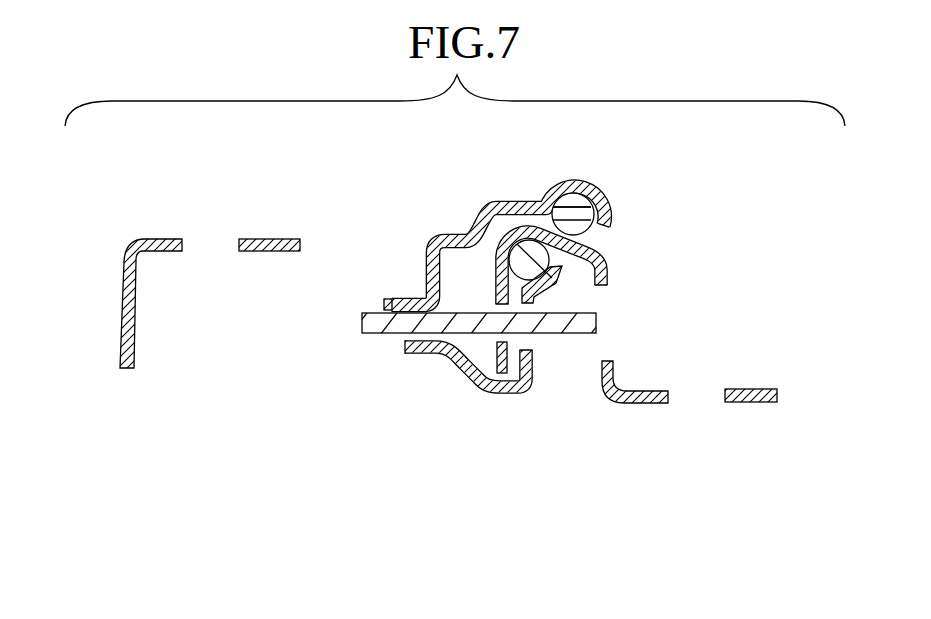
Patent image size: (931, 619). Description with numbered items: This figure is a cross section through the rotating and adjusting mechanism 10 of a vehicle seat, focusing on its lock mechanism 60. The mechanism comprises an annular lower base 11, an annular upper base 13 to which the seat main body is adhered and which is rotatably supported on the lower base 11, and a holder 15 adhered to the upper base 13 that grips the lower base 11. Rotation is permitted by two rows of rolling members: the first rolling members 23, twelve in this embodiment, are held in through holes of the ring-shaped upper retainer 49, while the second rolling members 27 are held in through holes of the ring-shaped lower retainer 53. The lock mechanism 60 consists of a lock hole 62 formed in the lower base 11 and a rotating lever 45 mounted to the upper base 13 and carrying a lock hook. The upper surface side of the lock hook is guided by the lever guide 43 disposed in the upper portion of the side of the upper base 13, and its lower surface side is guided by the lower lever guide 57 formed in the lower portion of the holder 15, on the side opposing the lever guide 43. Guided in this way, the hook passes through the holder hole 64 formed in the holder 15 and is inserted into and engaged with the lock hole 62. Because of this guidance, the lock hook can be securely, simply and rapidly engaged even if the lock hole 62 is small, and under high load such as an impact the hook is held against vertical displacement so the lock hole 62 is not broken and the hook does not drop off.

The rotating and adjusting mechanism 10 is at (104, 231).
The lower base 11 is at (637, 405).
The upper base 13 is at (463, 234).
The holder 15 is at (514, 393).
The first rolling members 23 is at (587, 180).
The second rolling members 27 is at (520, 240).
The lever guide portion 43 is at (406, 298).
The rotating lever 45 is at (362, 325).
The upper retainer 49 is at (588, 212).
The lower retainer 53 is at (533, 258).
The lower lever guide 57 is at (437, 354).
The lock mechanism 60 is at (358, 254).
The lock hole 62 is at (477, 381).
The holder hole 64 is at (525, 345).